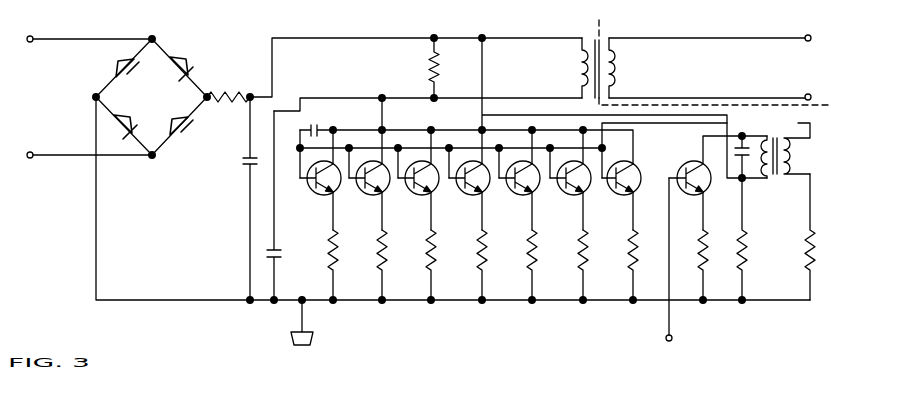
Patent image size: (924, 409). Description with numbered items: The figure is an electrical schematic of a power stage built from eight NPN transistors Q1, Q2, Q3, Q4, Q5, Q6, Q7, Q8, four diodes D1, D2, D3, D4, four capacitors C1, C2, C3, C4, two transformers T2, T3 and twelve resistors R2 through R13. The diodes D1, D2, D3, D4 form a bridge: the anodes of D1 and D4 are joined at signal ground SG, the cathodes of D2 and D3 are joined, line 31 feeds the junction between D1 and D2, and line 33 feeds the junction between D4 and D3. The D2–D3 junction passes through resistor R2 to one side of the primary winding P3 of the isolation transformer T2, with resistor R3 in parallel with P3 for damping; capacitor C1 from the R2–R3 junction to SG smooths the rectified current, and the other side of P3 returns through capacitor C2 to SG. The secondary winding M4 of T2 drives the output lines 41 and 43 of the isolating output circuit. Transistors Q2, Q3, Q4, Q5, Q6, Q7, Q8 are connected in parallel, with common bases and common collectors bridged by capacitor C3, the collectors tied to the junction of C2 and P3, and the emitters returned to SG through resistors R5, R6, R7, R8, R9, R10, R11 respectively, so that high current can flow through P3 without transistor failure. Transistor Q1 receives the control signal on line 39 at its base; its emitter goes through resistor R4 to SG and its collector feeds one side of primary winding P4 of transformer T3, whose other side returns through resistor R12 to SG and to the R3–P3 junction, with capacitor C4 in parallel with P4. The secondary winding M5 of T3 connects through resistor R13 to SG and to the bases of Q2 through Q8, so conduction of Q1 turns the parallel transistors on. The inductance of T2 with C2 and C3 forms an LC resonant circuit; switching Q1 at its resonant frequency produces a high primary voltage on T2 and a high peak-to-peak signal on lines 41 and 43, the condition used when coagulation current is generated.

The line 31 is at (95, 38).
The line 33 is at (77, 155).
The diode D1 is at (108, 67).
The diode D2 is at (192, 68).
The diode D3 is at (181, 133).
The diode D4 is at (138, 121).
The resistor R2 is at (224, 92).
The capacitor C1 is at (243, 163).
The capacitor C2 is at (278, 249).
The capacitor C3 is at (312, 129).
The resistor R3 is at (426, 69).
The transformer T2 is at (594, 33).
The primary winding P3 is at (576, 68).
The secondary winding M4 is at (616, 76).
The line 41 is at (732, 38).
The line 43 is at (735, 97).
The NPN transistor Q1 is at (701, 195).
The NPN transistor Q2 is at (631, 195).
The NPN transistor Q3 is at (581, 195).
The NPN transistor Q4 is at (530, 195).
The NPN transistor Q5 is at (480, 195).
The NPN transistor Q6 is at (429, 195).
The NPN transistor Q7 is at (380, 195).
The NPN transistor Q8 is at (331, 195).
The resistor R4 is at (700, 249).
The resistor R5 is at (629, 249).
The resistor R6 is at (579, 249).
The resistor R7 is at (529, 249).
The resistor R8 is at (478, 249).
The resistor R9 is at (429, 249).
The resistor R10 is at (381, 249).
The resistor R11 is at (332, 249).
The resistor R12 is at (741, 249).
The resistor R13 is at (805, 249).
The signal ground SG is at (307, 333).
The line 39 is at (671, 332).
The capacitor C4 is at (738, 153).
The primary winding P4 is at (759, 150).
The transformer T3 is at (775, 136).
The secondary winding M5 is at (790, 154).